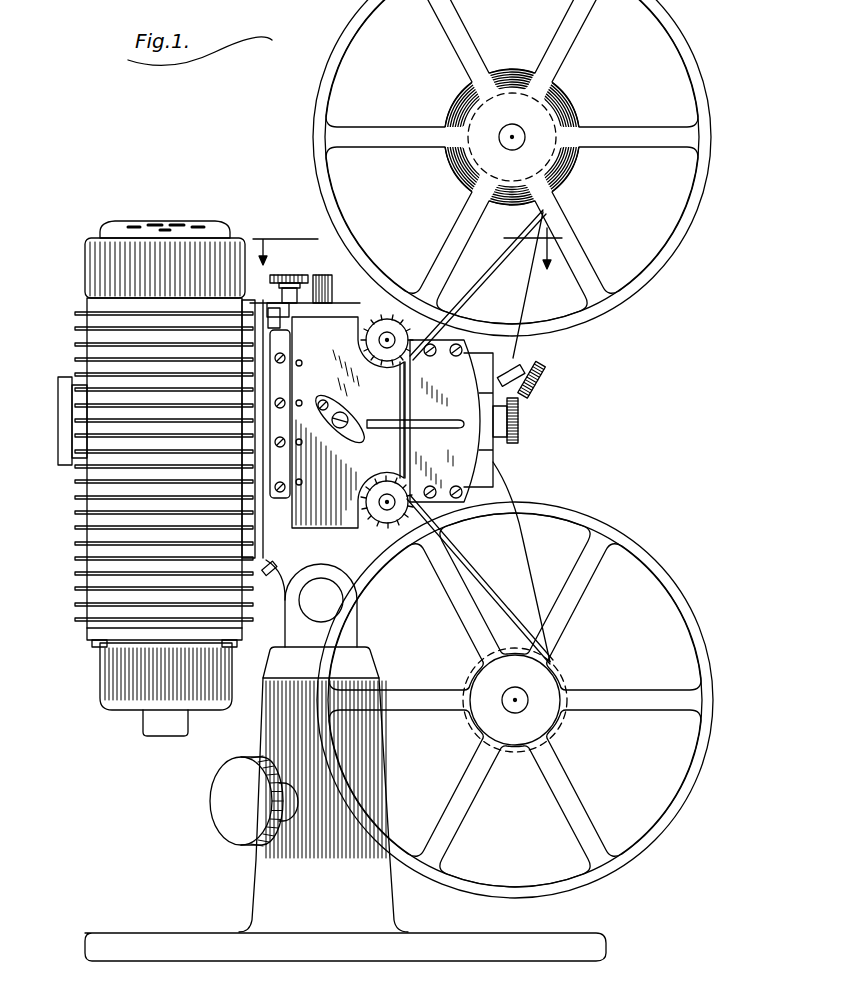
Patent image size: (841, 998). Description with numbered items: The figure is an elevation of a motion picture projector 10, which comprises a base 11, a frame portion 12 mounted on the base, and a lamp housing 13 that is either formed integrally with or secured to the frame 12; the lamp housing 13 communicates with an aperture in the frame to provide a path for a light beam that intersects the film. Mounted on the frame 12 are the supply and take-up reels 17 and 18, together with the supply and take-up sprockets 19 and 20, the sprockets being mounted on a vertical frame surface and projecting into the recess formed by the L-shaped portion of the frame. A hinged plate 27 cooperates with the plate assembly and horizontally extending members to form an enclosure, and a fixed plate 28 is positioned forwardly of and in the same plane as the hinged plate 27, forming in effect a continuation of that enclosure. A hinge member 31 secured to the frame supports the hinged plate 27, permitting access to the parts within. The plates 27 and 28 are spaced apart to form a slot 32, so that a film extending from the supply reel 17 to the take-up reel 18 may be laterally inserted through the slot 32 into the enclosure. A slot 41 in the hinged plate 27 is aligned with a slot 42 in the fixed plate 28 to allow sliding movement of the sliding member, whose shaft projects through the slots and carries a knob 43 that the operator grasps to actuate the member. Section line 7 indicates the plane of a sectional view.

The section line 7- 7 is at (414, 240).
The projector 10 is at (252, 192).
The base 11 is at (268, 888).
The frame portion 12 is at (365, 437).
The lamp housing 13 is at (75, 523).
The supply reel 17 is at (655, 262).
The take-up reel 18 is at (668, 586).
The supply sprocket 19 is at (384, 320).
The take-up sprocket 20 is at (385, 515).
The hinged plate 27 is at (329, 362).
The fixed plate 28 is at (474, 421).
The hinge member 31 is at (272, 376).
The slot 32 is at (404, 451).
The slot 41 is at (372, 422).
The slot 42 is at (427, 423).
The knob 43 is at (339, 425).